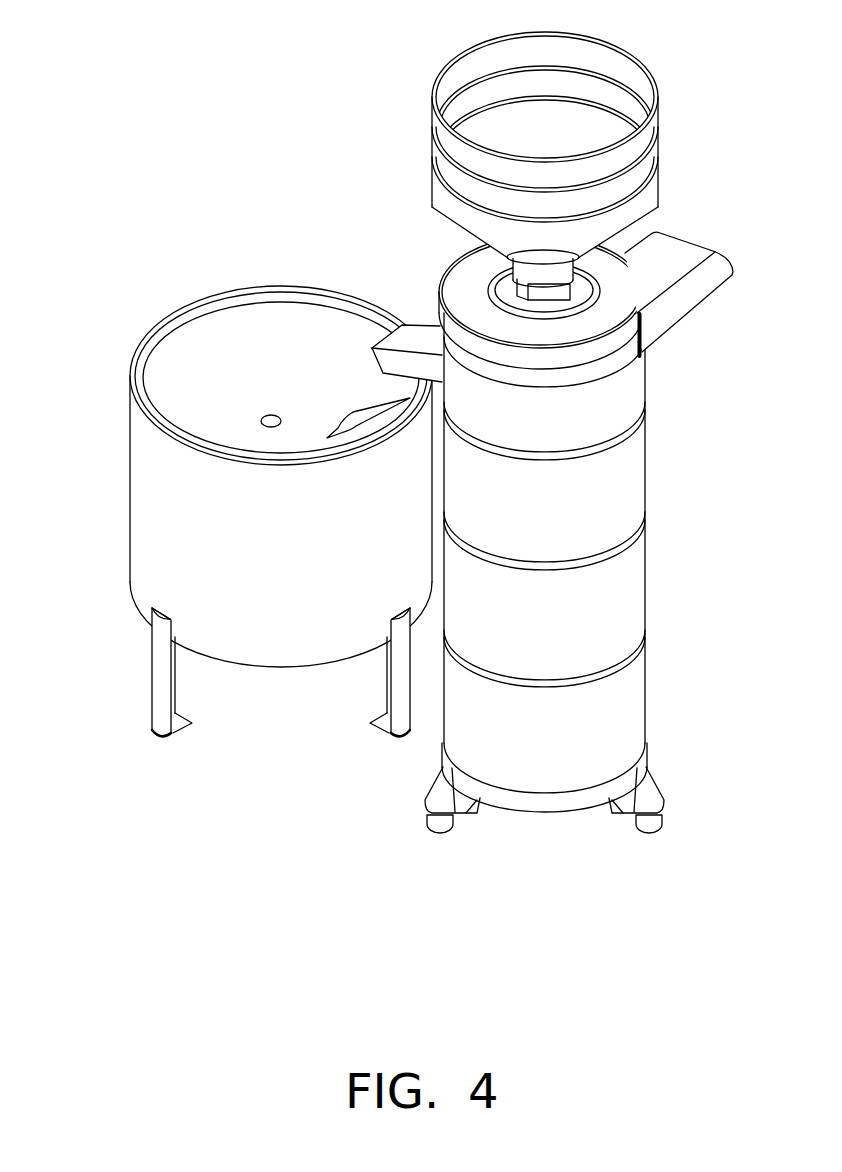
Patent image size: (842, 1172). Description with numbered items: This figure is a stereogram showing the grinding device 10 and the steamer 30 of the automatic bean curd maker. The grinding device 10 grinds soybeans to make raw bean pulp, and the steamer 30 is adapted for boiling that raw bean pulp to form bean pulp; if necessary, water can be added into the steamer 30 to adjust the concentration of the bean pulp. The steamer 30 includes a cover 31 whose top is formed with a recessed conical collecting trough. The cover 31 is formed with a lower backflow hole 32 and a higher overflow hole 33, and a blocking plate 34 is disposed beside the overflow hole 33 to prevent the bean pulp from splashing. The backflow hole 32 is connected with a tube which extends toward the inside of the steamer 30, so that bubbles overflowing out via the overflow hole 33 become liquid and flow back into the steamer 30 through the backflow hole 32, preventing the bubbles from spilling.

The grinding device 10 is at (630, 468).
The steamer 30 is at (118, 447).
The cover 31 is at (260, 332).
The backflow hole 32 is at (265, 416).
The overflow hole 33 is at (355, 410).
The blocking plate 34 is at (354, 430).